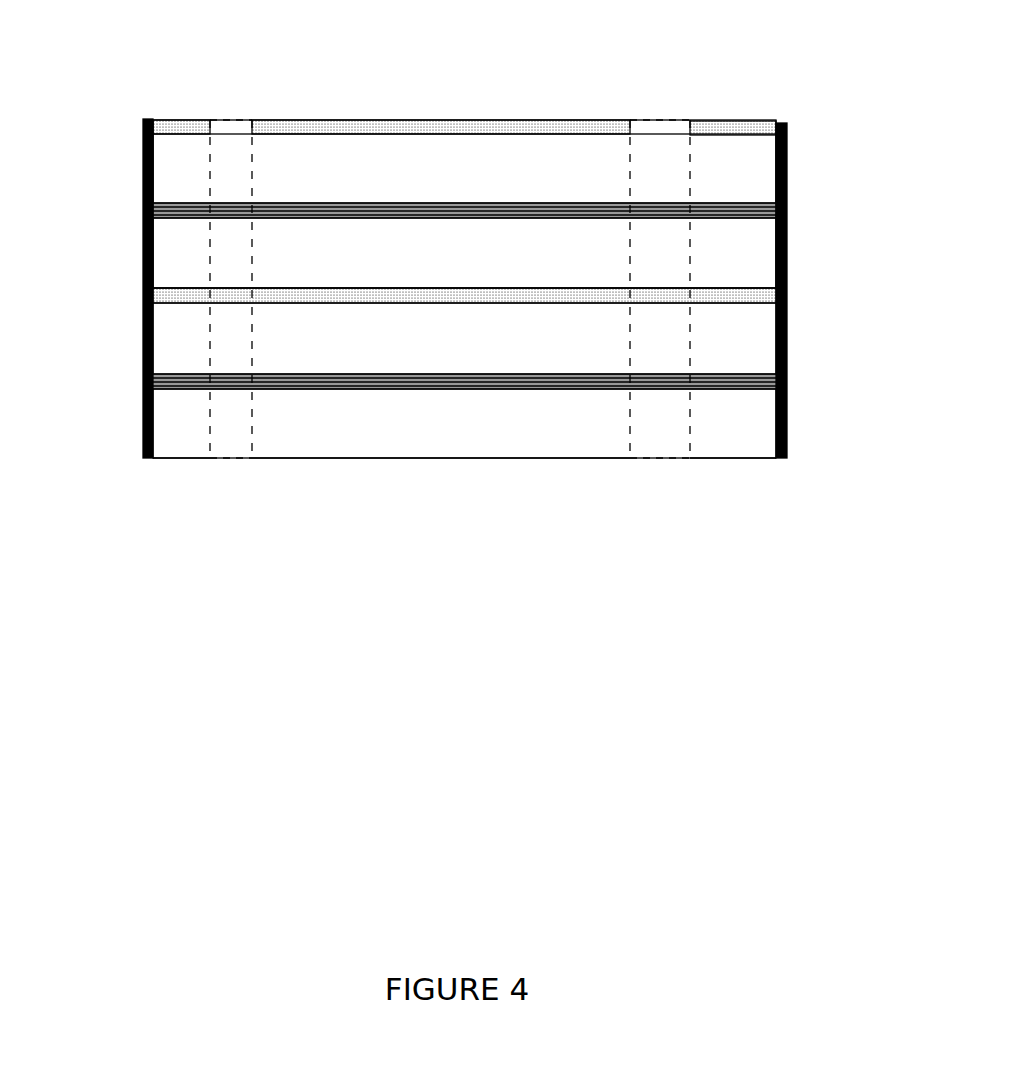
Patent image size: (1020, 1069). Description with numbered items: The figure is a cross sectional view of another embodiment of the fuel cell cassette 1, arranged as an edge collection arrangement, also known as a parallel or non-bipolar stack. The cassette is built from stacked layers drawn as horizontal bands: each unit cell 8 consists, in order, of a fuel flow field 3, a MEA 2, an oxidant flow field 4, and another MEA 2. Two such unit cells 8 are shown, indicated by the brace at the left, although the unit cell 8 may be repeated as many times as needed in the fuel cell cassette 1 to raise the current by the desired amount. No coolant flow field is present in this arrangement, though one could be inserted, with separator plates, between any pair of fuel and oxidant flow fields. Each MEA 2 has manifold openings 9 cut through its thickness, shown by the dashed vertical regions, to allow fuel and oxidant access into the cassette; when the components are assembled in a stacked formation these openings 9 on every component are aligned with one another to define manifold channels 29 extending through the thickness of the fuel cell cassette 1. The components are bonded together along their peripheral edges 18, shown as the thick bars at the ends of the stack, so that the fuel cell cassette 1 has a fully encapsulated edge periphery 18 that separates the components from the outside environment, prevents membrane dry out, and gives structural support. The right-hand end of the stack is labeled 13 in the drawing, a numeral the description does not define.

The fuel cell cassette 1 is at (471, 291).
The MEA 2 is at (790, 165).
The fuel flow field 3 is at (792, 122).
The oxidant flow field 4 is at (790, 212).
The unit cell 8 is at (150, 119).
The manifold openings 9 is at (215, 465).
The right end electrode 13 is at (782, 462).
The peripheral edges 18 is at (145, 461).
The manifold channels 29 is at (662, 150).